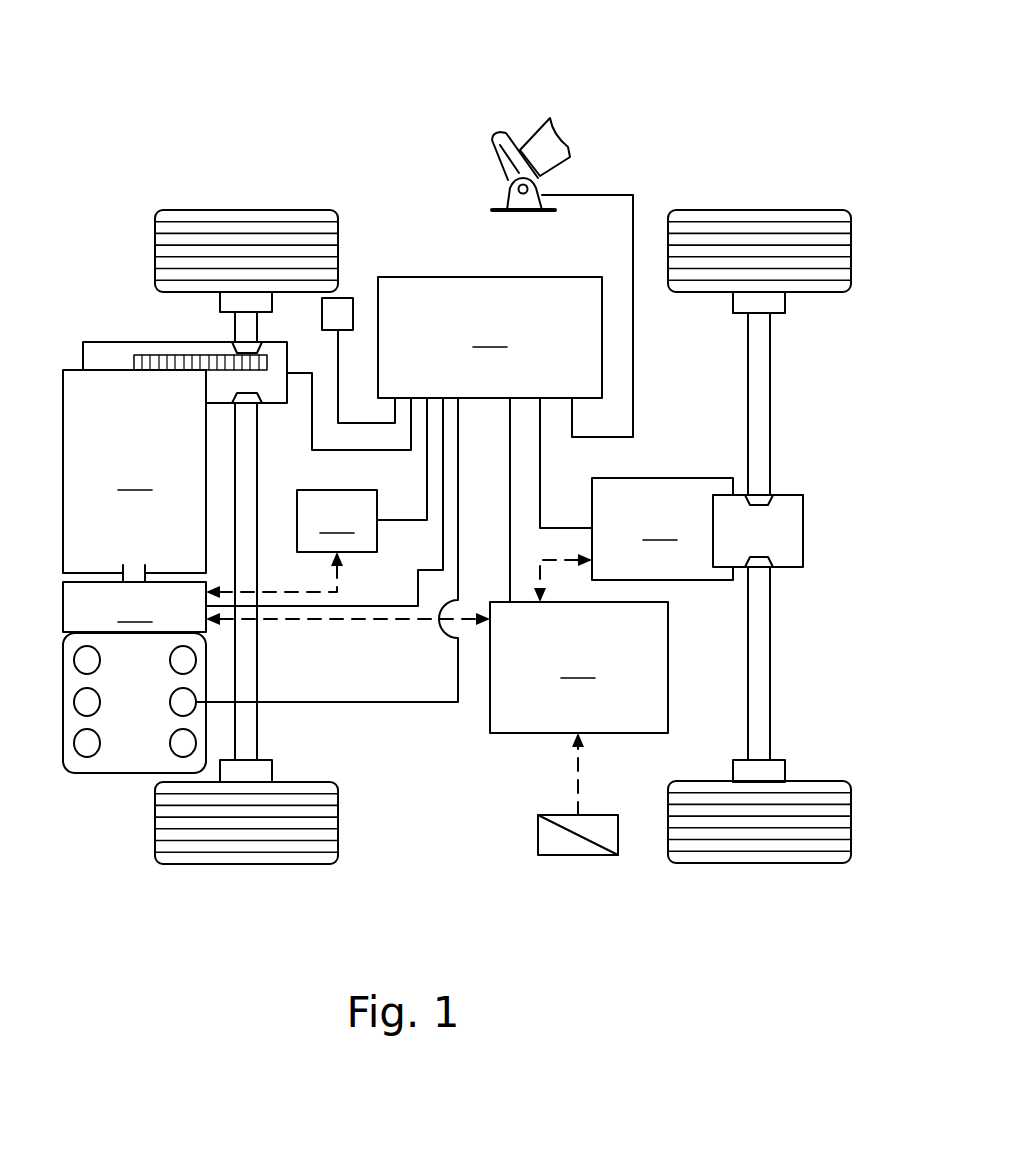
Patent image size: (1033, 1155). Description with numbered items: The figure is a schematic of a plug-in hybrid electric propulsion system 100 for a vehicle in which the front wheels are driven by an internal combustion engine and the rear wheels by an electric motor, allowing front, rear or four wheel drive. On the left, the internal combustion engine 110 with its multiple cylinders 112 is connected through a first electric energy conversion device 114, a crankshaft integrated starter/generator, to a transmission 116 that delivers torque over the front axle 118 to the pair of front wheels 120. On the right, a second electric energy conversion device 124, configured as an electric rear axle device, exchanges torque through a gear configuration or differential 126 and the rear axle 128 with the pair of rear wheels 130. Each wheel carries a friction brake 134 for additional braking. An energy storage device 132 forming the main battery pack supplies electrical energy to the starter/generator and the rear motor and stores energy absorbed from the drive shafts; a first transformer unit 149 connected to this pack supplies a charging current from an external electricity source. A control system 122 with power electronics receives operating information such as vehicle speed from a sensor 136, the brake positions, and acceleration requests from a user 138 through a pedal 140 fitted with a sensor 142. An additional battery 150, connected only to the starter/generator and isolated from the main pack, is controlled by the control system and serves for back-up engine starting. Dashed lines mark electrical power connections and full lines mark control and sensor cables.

The plug-in hybrid electric propulsion system 100 is at (716, 112).
The internal combustion engine 110 is at (122, 750).
The cylinders 112 is at (90, 755).
The first electric energy conversion device 114 is at (134, 607).
The transmission 116 is at (175, 462).
The front axle 118 is at (247, 327).
The front wheels 120 is at (252, 210).
The control system 122 is at (414, 448).
The second electric energy conversion device 124 is at (662, 529).
The differential 126 is at (788, 513).
The rear axle 128 is at (760, 397).
The rear wheels 130 is at (747, 210).
The energy storage device 132 is at (437, 643).
The friction brake 134 is at (238, 303).
The sensor 136 is at (338, 298).
The user 138 is at (568, 147).
The pedal 140 is at (495, 150).
The sensor 142 is at (513, 198).
The first transformer unit 149 is at (560, 845).
The additional battery 150 is at (291, 544).